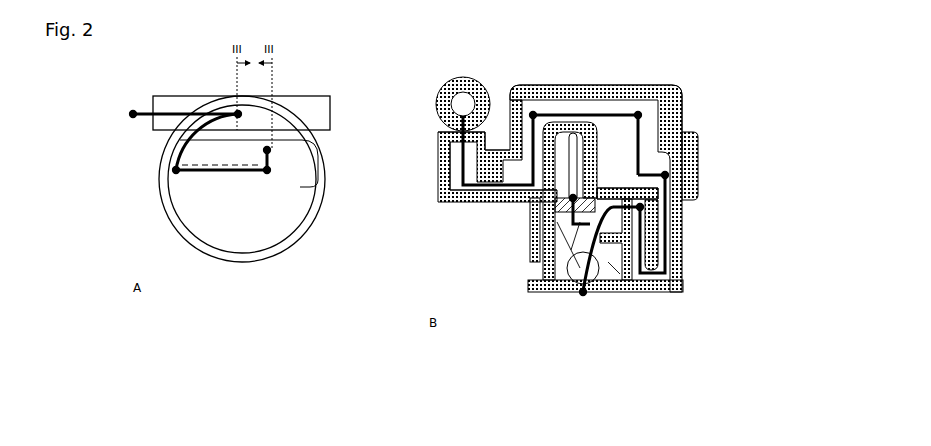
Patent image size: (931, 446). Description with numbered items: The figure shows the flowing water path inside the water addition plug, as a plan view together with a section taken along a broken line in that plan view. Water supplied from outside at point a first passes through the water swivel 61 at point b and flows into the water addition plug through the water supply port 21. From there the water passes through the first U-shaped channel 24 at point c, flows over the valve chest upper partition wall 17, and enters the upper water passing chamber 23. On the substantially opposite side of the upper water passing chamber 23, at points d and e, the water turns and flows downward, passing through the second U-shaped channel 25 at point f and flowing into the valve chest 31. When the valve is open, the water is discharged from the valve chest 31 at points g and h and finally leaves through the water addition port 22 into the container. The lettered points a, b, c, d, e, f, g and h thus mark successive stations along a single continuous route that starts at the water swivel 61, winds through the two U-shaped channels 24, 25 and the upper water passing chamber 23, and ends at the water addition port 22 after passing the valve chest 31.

The water supplied from outside a is at (131, 111).
The flow through water swivel b is at (235, 110).
The flow through first U-shaped channel c is at (176, 158).
The downward flow from opposite side of upper chamber d is at (269, 172).
The downward flow from opposite side of upper chamber e is at (270, 152).
The flow through second U-shaped channel f is at (642, 209).
The discharge from valve chest g is at (529, 236).
The discharge from valve chest h is at (585, 295).
The valve chest upper partition wall 17 is at (574, 125).
The water supply port 21 is at (447, 128).
The water addition port 22 is at (580, 305).
The upper water passing chamber 23 is at (618, 138).
The first U-shaped channel 24 is at (483, 203).
The second U-shaped channel 25 is at (656, 282).
The valve chest 31 is at (610, 264).
The water swivel 61 is at (298, 100).